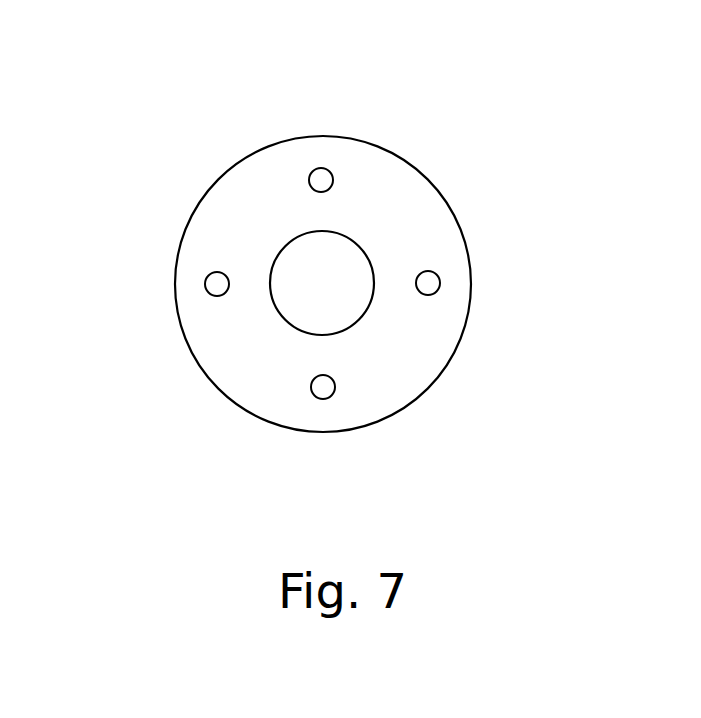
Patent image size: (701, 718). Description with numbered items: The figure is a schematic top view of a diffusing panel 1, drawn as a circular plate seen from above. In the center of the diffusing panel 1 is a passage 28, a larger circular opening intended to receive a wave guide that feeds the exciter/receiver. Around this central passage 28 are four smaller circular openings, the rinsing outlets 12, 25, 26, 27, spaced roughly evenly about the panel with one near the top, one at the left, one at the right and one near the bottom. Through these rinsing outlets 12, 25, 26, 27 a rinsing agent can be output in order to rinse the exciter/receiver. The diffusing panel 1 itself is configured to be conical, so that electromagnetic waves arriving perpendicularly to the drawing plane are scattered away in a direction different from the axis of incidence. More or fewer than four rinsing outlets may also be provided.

The diffusing panel 1 is at (247, 185).
The rinsing outlet 12 is at (321, 168).
The rinsing outlet 25 is at (208, 293).
The rinsing outlet 26 is at (333, 395).
The rinsing outlet 27 is at (440, 287).
The passage 28 is at (335, 258).